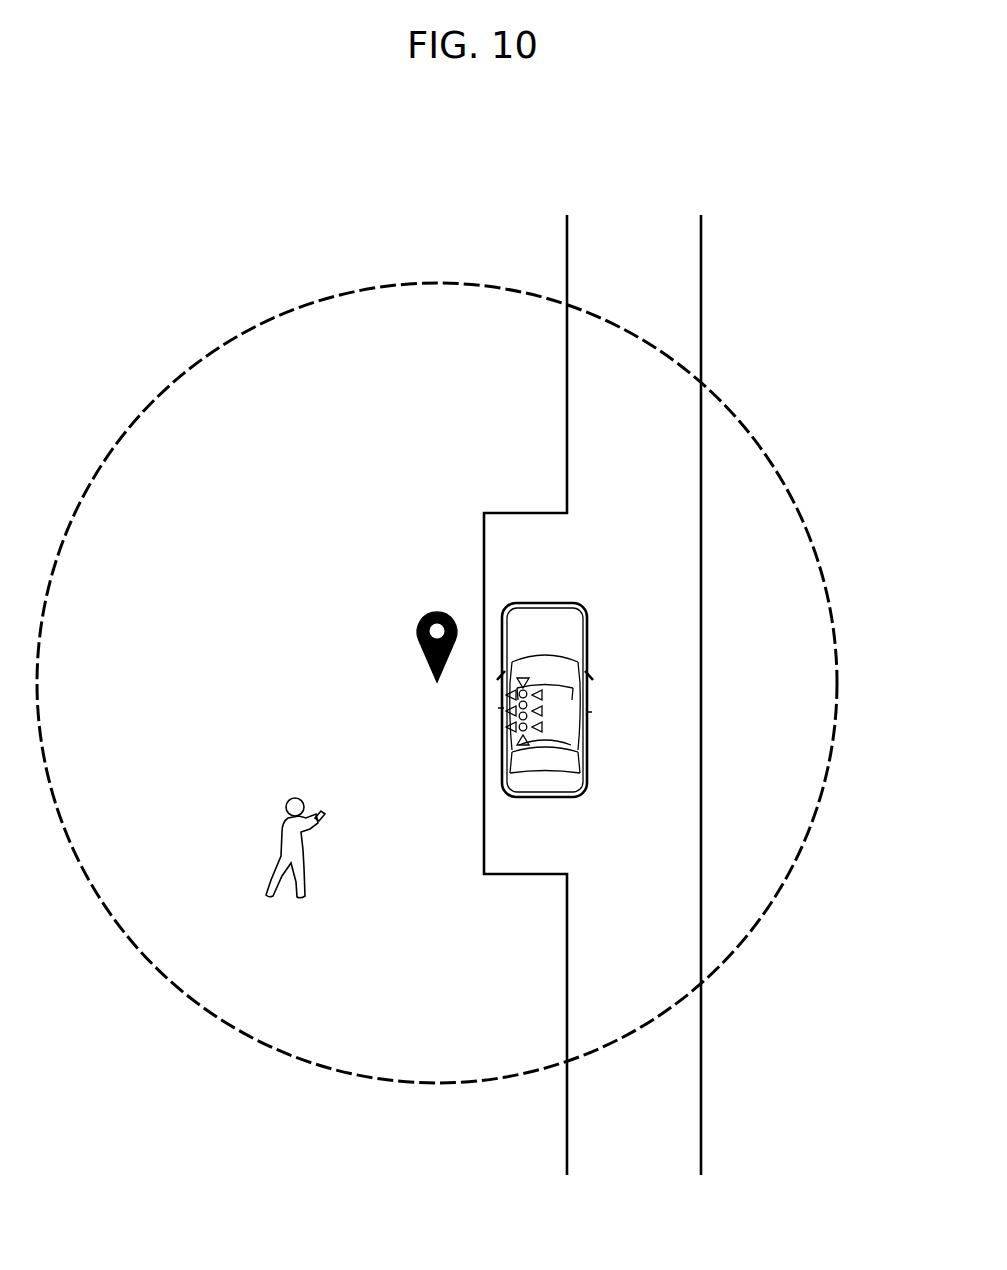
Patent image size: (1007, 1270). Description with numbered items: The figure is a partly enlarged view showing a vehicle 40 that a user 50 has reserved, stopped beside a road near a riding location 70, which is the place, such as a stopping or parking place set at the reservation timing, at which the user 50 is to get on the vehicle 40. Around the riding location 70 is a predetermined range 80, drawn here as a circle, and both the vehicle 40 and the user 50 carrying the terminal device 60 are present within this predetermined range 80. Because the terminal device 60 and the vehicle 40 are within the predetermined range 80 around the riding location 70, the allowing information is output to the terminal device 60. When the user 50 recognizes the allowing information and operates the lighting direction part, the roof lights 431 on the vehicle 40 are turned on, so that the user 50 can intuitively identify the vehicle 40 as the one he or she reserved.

The predetermined range 80 is at (826, 585).
The riding location 70 is at (420, 657).
The vehicle 40 is at (560, 790).
The roof lights 431 is at (527, 732).
The user 50 is at (282, 836).
The terminal device 60 is at (318, 810).